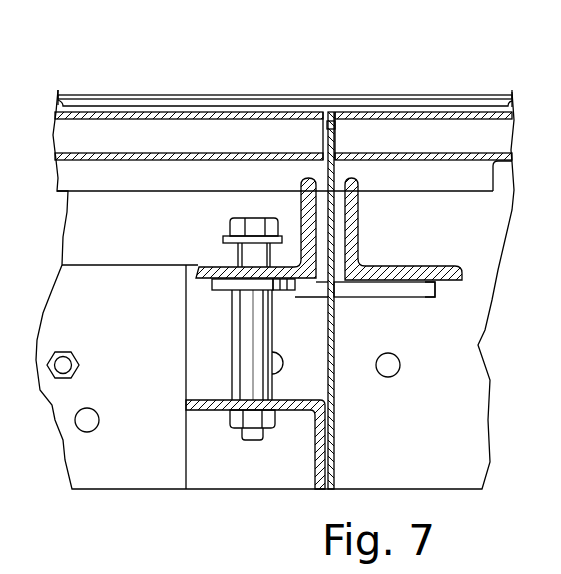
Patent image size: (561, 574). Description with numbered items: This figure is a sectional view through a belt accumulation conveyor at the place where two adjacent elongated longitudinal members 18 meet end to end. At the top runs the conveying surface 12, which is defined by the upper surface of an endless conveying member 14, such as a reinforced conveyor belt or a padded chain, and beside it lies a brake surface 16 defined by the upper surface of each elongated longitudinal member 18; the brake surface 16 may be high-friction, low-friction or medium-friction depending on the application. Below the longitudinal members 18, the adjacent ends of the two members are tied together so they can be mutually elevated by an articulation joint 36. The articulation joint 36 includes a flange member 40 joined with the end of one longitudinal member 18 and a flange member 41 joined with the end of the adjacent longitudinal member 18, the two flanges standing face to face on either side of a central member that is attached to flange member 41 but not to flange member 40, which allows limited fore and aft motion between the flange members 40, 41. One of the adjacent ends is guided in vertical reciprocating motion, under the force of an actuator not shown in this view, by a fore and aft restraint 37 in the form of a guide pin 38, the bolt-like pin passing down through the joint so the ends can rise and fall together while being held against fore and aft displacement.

The conveying surface 12 is at (275, 96).
The endless conveying member 14 is at (413, 298).
The brake surface 16 is at (220, 112).
The elongated longitudinal member 18 is at (143, 141).
The articulation joint 36 is at (436, 296).
The fore and aft restraint 37 is at (208, 284).
The guide pin 38 is at (228, 253).
The flange member 40 is at (358, 184).
The flange member 41 is at (301, 186).